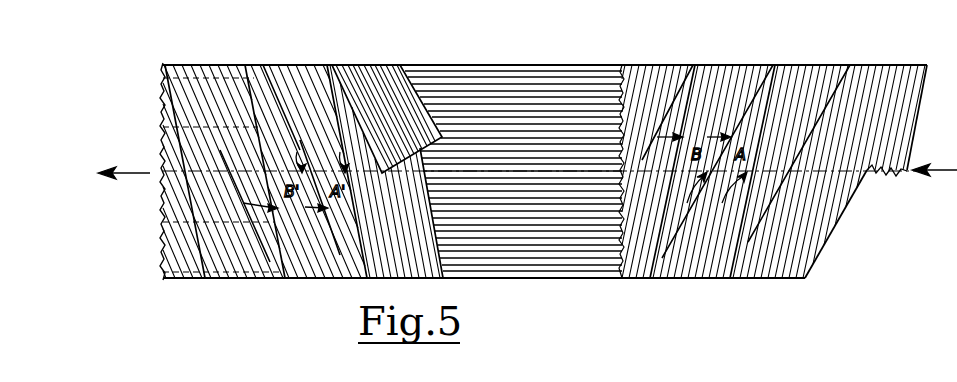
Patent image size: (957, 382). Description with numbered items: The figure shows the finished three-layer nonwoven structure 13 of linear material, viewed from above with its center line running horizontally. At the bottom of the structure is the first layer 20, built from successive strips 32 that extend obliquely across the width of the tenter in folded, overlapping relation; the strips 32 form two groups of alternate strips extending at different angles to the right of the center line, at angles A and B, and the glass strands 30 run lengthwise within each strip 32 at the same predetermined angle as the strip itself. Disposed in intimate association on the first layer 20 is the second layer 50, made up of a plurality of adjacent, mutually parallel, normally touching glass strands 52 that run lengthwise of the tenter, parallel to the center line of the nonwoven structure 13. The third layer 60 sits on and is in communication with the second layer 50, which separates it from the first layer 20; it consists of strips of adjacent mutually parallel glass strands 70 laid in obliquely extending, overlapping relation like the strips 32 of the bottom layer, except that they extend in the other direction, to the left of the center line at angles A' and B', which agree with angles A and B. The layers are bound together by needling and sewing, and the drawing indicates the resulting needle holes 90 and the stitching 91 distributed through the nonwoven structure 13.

The nonwoven structure 13 is at (229, 41).
The needle holes 90 is at (280, 78).
The stitching 91 is at (186, 83).
The third layer 60 is at (307, 63).
The glass strands 70 is at (375, 82).
The second layer 50 is at (533, 63).
The glass strands 52 is at (585, 88).
The first layer 20 is at (791, 22).
The glass strands 30 is at (818, 88).
The strips 32 is at (838, 214).